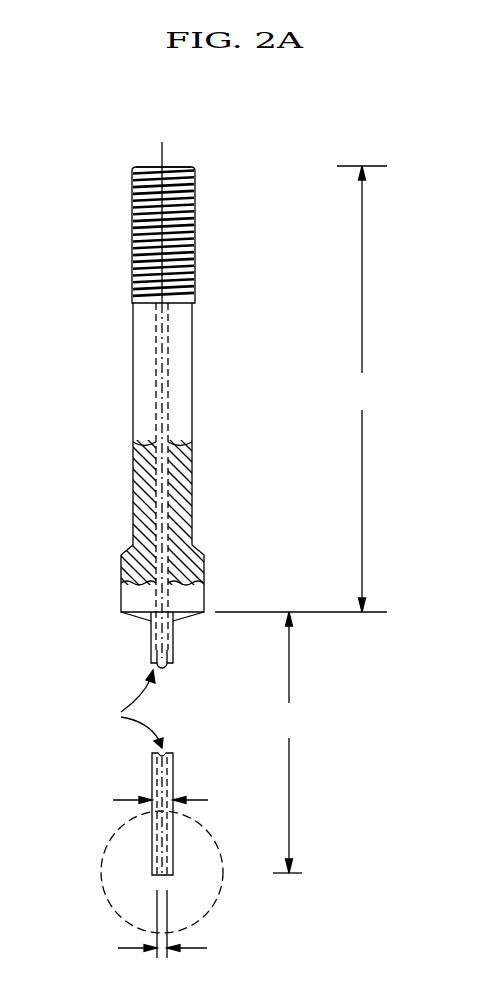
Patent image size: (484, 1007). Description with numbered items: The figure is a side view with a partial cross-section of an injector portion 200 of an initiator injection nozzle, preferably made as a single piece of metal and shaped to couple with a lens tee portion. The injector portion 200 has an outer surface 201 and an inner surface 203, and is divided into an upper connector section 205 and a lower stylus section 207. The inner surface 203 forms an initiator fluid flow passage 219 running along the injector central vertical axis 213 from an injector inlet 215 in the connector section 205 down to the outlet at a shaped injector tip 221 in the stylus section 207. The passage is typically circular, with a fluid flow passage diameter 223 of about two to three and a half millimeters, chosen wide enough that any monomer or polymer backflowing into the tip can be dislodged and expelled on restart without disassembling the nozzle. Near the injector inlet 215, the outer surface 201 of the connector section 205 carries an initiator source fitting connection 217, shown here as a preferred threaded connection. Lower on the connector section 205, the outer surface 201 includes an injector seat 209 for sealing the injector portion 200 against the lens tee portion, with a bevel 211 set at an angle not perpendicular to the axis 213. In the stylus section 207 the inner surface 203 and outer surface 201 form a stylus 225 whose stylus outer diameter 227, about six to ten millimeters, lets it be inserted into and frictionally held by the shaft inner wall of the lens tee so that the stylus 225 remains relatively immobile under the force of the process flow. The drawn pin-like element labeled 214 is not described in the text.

The injector portion 200 is at (94, 340).
The outer surface 201 is at (194, 318).
The inner surface 203 is at (169, 390).
The connector section 205 is at (301, 389).
The stylus section 207 is at (285, 742).
The injector seat 209 is at (133, 619).
The bevel 211 is at (196, 619).
The injector central vertical axis 213 is at (162, 152).
The pin 214 is at (170, 780).
The injector inlet 215 is at (172, 165).
The initiator source fitting connection 217 is at (196, 235).
The initiator fluid flow passage 219 is at (168, 475).
The shaped injector tip 221 is at (157, 877).
The fluid flow passage diameter 223 is at (183, 948).
The stylus 225 is at (123, 709).
The stylus outer diameter 227 is at (181, 800).